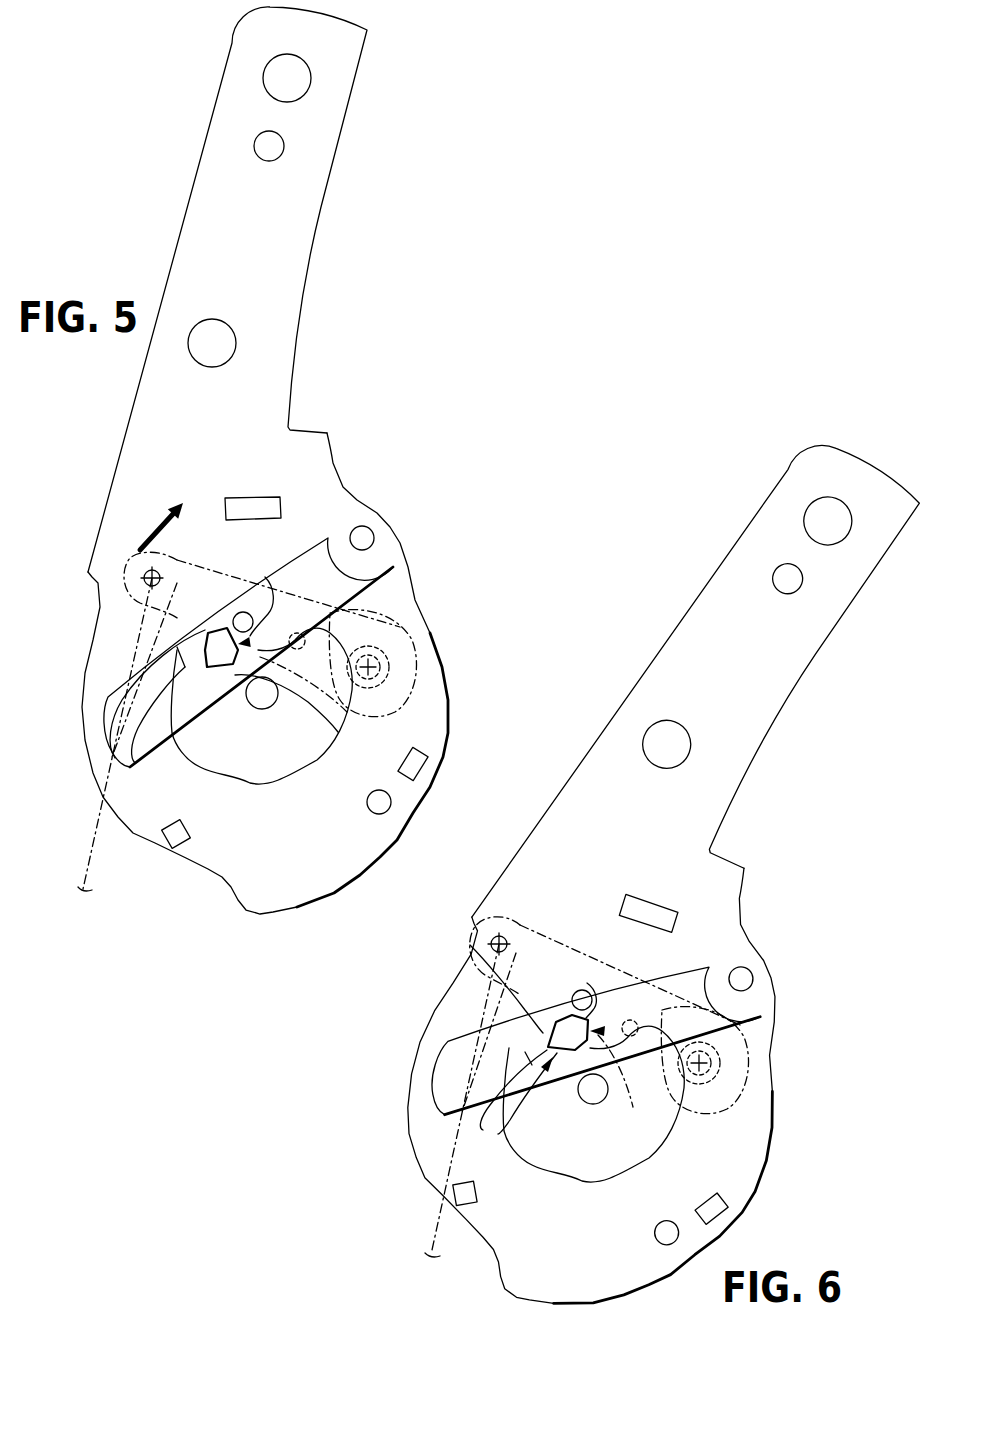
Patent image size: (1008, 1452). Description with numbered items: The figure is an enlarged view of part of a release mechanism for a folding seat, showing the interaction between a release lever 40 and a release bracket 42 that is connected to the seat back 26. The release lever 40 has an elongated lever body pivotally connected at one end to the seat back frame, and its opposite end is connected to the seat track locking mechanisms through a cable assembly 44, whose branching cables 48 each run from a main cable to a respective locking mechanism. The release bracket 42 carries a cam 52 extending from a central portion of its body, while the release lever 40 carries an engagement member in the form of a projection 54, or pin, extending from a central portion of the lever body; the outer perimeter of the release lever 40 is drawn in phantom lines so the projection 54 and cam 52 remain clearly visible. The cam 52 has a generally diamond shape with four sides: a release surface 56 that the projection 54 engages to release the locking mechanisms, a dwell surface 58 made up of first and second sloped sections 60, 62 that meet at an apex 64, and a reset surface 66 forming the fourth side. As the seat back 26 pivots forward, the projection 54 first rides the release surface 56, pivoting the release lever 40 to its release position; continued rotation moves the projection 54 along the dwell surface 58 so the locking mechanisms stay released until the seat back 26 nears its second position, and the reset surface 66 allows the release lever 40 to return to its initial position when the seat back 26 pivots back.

In FIG. 5, the seat back 26 is at (348, 331).
In FIG. 6, the seat back 26 is at (787, 798).
In FIG. 5, the release lever 40 is at (411, 592).
In FIG. 6, the release lever 40 is at (631, 976).
In FIG. 5, the release bracket 42 is at (328, 536).
In FIG. 6, the release bracket 42 is at (713, 952).
In FIG. 5, the cable assembly 44 is at (81, 869).
In FIG. 6, the cable assembly 44 is at (423, 1238).
In FIG. 5, the branching cable 48 is at (89, 854).
In FIG. 6, the branching cable 48 is at (437, 1222).
In FIG. 5, the cam 52 is at (108, 722).
In FIG. 6, the cam 52 is at (512, 1096).
In FIG. 5, the projection 54 is at (265, 577).
In FIG. 5, the release surface 56 is at (287, 643).
In FIG. 6, the release surface 56 is at (625, 1040).
In FIG. 5, the dwell surface 58 is at (200, 615).
In FIG. 6, the dwell surface 58 is at (538, 1031).
In FIG. 5, the first sloped section 60 is at (222, 620).
In FIG. 6, the first sloped section 60 is at (573, 996).
In FIG. 5, the second sloped section 62 is at (113, 765).
In FIG. 6, the second sloped section 62 is at (470, 946).
In FIG. 5, the apex 64 is at (210, 627).
In FIG. 6, the apex 64 is at (550, 1037).
In FIG. 5, the reset surface 66 is at (229, 668).
In FIG. 6, the reset surface 66 is at (568, 1055).